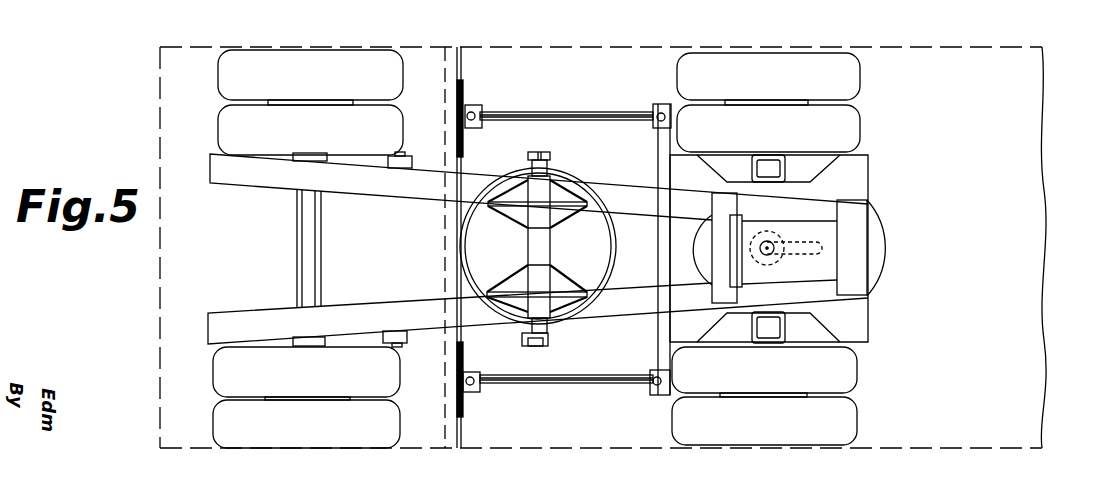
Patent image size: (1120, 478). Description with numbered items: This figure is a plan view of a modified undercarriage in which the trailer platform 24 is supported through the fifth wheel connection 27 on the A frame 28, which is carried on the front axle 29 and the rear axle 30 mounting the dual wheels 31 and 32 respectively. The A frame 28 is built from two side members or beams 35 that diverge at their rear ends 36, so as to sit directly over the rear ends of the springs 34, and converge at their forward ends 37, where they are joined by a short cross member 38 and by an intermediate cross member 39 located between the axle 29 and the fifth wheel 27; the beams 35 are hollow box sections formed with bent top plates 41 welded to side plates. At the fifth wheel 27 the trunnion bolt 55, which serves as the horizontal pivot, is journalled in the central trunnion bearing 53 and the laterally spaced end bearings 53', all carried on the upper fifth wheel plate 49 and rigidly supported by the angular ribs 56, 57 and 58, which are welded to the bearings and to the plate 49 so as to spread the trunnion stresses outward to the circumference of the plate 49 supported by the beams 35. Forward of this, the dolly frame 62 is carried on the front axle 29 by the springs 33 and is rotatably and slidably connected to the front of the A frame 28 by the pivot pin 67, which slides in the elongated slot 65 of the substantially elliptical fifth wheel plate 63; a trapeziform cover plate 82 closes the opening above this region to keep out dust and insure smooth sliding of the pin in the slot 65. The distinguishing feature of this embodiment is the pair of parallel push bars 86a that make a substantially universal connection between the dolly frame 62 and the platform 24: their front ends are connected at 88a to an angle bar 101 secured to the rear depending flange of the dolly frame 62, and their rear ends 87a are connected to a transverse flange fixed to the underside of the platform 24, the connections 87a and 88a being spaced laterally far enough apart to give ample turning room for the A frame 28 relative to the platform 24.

The trailer platform 24 is at (1046, 279).
The fifth wheel 27 is at (460, 232).
The A frame 28 is at (425, 338).
The front axle 29 is at (767, 345).
The rear axle 30 is at (297, 243).
The dual wheels 31 is at (780, 67).
The dual wheels 32 is at (350, 62).
The springs 33 is at (797, 167).
The springs 34 is at (380, 165).
The side members or beams 35 is at (626, 297).
The rear ends 36 is at (210, 170).
The forward ends 37 is at (835, 197).
The short cross member 38 is at (870, 268).
The intermediate cross member 39 is at (722, 286).
The bent top plates 41 is at (421, 251).
The fifth wheel plate 49 is at (489, 253).
The central trunnion bearing 53 is at (559, 253).
The end bearings 53' is at (584, 251).
The trunnion bolt 55 is at (540, 168).
The angular rib 56 is at (517, 183).
The angular rib 57 is at (495, 194).
The angular rib 58 is at (513, 222).
The dolly frame 62 is at (872, 323).
The elliptical fifth wheel plate 63 is at (886, 231).
The elongated slot 65 is at (795, 252).
The pivot pin 67 is at (772, 241).
The trapeziform cover plate 82 is at (752, 223).
The parallel push bars 86a is at (545, 115).
The rear end connections 87a is at (480, 106).
The front end connections 88a is at (676, 106).
The angle bar 101 is at (663, 140).